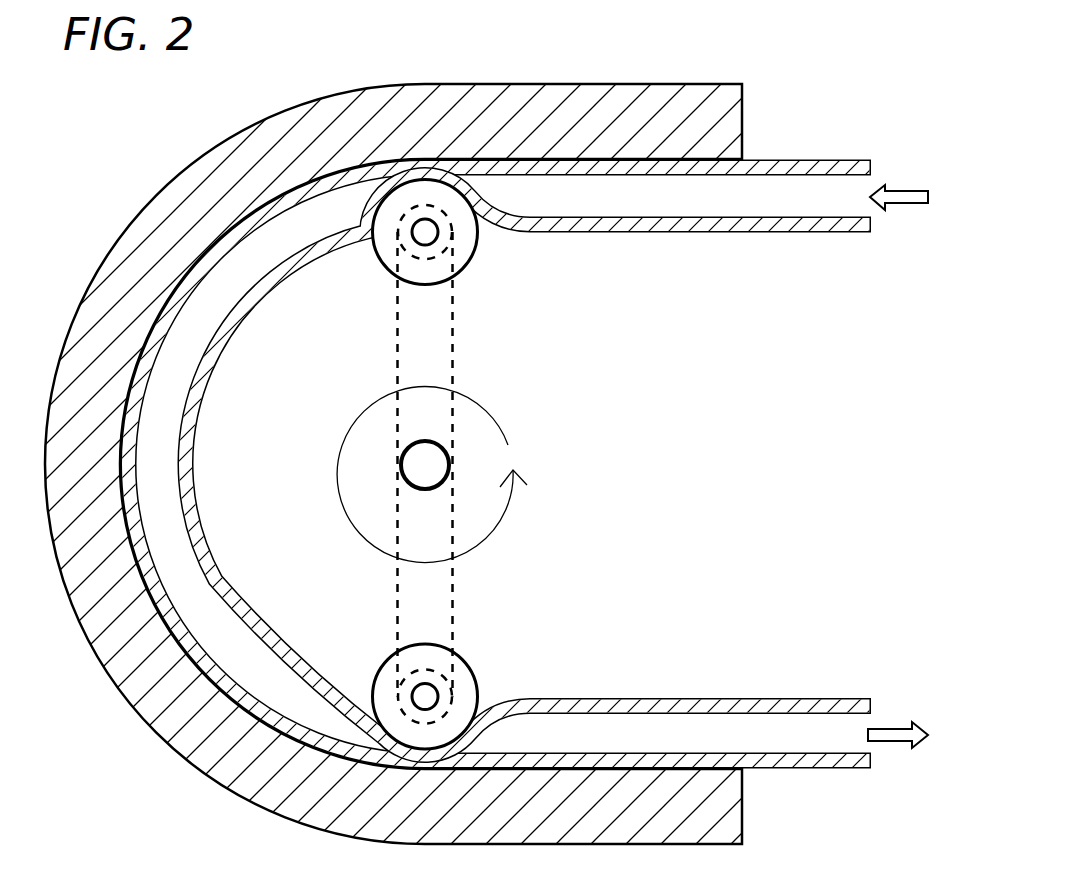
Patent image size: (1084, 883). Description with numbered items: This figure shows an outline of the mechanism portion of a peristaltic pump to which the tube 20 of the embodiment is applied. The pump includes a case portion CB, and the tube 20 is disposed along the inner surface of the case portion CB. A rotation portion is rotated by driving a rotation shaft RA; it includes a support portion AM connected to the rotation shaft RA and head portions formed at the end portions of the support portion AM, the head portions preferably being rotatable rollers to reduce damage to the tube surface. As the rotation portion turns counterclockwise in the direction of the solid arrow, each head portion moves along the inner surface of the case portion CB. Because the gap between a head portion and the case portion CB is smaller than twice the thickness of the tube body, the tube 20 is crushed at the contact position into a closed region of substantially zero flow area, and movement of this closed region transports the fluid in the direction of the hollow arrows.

The case portion CB is at (743, 86).
The tube 20 is at (703, 223).
The rotation shaft RA is at (430, 463).
The support portion AM is at (435, 595).